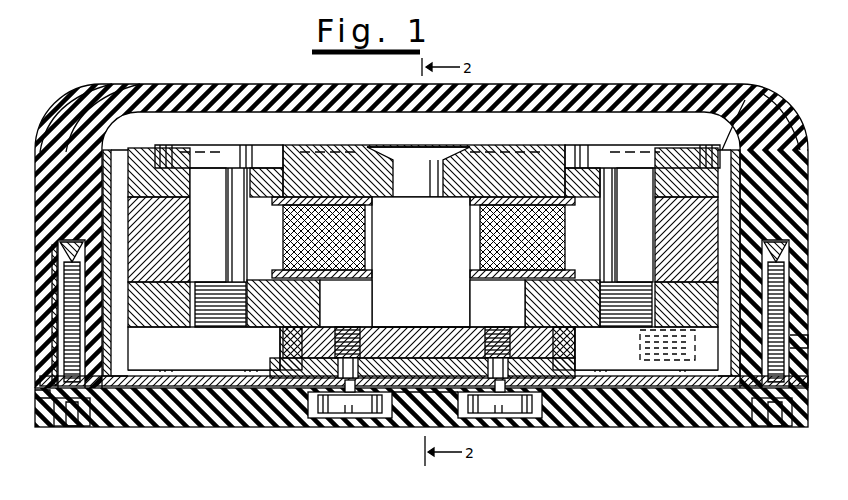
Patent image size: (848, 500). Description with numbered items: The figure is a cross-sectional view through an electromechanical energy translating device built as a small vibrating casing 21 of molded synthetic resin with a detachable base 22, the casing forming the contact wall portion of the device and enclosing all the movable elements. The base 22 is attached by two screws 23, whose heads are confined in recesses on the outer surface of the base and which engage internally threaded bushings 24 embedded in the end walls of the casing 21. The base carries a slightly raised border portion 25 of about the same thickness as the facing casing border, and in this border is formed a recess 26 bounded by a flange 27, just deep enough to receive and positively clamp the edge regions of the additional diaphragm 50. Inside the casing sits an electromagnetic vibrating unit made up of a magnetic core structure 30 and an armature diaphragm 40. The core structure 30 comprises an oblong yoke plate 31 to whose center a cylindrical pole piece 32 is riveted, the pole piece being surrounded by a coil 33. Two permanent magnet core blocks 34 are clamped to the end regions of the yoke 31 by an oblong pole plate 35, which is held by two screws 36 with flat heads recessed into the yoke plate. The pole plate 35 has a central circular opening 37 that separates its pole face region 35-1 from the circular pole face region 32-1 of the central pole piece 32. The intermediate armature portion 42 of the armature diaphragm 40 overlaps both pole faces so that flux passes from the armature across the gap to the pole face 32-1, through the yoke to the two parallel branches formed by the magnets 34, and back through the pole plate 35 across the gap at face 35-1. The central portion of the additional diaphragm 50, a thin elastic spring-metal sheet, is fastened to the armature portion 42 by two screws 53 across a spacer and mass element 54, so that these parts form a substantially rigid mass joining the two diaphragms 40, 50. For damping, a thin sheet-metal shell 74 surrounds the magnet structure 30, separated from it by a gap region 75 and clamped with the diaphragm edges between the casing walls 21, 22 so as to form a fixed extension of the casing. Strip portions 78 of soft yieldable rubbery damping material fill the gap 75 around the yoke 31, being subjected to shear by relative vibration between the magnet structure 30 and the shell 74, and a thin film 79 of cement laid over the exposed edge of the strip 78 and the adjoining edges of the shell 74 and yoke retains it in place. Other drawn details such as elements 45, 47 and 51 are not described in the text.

The casing 21 is at (75, 112).
The base 22 is at (206, 427).
The screws 23 is at (752, 420).
The internally threaded bushings 24 is at (740, 272).
The raised border portion 25 is at (795, 420).
The recess 26 is at (62, 420).
The flange 27 is at (36, 400).
The magnetic core structure 30 is at (486, 138).
The yoke plate 31 is at (312, 148).
The pole piece 32 is at (421, 262).
The pole face region of the central pole piece 32-1 is at (414, 330).
The coil 33 is at (485, 218).
The permanent magnet core blocks 34 is at (150, 215).
The pole plate 35 is at (570, 285).
The pole face region of the pole plate 35-1 is at (512, 312).
The screws 36 is at (210, 180).
The central circular opening 37 is at (490, 290).
The armature diaphragm 40 is at (150, 355).
The intermediate armature portion 42 is at (417, 423).
The circuit board 45 is at (182, 375).
The component 47 is at (690, 355).
The additional diaphragm 50 is at (254, 375).
The support 51 is at (590, 375).
The screws 53 is at (330, 418).
The spacer and mass element 54 is at (452, 418).
The shell 74 is at (107, 212).
The gap region 75 is at (126, 276).
The strip portions of damping material 78 is at (45, 120).
The film of cement 79 is at (74, 98).